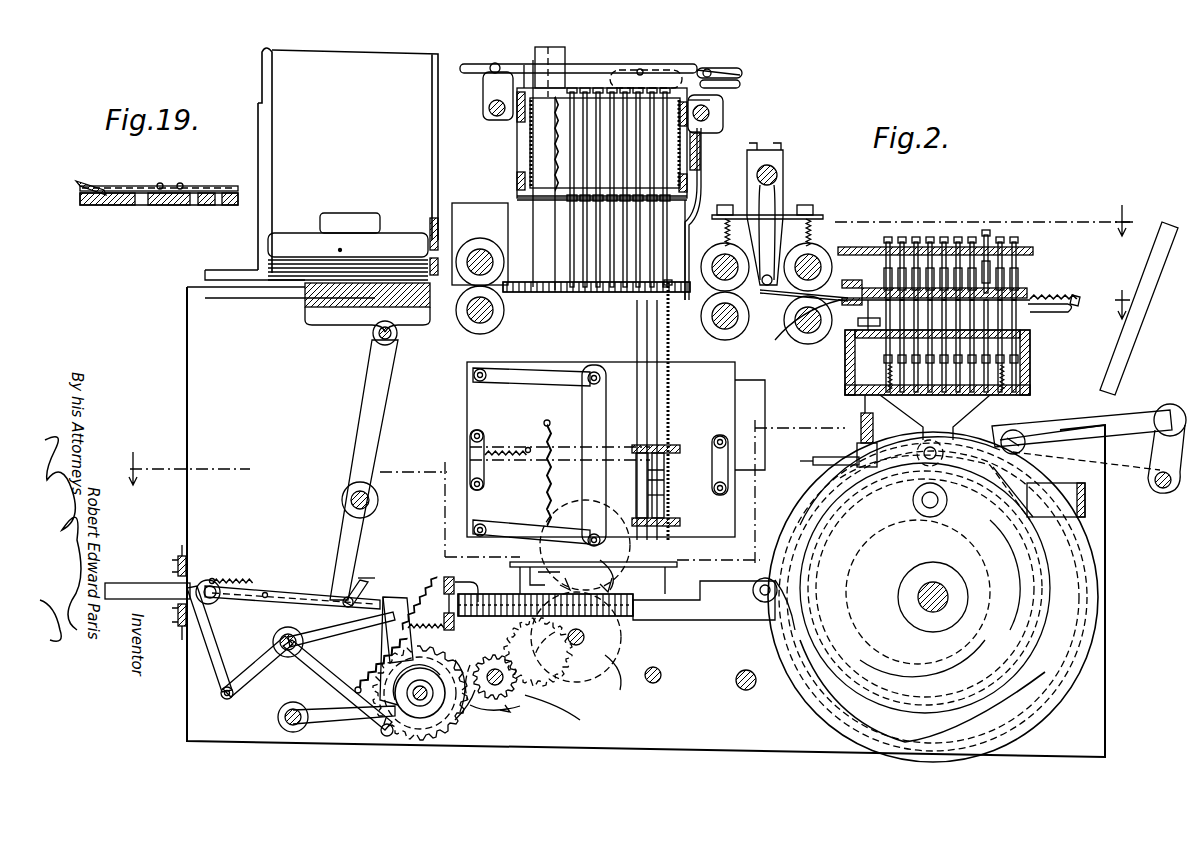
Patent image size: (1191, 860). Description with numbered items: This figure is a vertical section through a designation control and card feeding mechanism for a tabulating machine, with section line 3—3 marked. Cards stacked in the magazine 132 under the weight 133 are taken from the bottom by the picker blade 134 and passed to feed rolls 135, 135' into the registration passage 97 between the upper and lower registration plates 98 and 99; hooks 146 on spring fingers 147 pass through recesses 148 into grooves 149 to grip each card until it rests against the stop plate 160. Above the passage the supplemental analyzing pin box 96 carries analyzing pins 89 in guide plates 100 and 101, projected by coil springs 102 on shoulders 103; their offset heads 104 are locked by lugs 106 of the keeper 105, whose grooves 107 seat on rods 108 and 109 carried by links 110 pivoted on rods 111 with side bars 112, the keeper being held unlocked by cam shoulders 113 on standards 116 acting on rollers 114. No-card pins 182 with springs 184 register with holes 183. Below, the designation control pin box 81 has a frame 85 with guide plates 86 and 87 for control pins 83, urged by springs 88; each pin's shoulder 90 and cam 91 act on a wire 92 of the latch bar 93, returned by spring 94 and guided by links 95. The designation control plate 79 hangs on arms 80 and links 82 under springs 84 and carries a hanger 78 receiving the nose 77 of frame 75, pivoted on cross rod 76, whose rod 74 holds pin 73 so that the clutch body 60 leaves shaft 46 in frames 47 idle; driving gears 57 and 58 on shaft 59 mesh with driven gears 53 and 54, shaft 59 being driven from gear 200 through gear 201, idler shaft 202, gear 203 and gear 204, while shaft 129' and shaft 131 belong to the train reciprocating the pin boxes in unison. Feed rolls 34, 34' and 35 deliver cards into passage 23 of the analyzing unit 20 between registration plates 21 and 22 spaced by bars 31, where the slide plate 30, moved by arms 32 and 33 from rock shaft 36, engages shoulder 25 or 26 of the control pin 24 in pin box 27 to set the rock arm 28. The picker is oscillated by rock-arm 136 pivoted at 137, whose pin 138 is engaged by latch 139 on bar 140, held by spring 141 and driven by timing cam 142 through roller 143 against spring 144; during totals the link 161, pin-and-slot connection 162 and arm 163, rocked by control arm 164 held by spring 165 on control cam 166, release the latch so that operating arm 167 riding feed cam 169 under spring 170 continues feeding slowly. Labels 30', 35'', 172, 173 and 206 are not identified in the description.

In FIG. 2, the section line 3 is at (625, 332).
In FIG. 2, the analyzing unit 20 is at (953, 244).
In FIG. 2, the card registration plate 21 is at (1020, 290).
In FIG. 2, the card registration plate 22 is at (1040, 312).
In FIG. 2, the card passage 23 is at (1050, 297).
In FIG. 2, the total and space control pin 24 is at (862, 400).
In FIG. 2, the shoulder 25 is at (807, 331).
In FIG. 2, the shoulder 26 is at (860, 322).
In FIG. 2, the analyzing pin box 27 is at (1030, 358).
In FIG. 2, the rock arm 28 is at (1005, 430).
In FIG. 2, the perforated plate 30 is at (852, 272).
In FIG. 2, the guide block 30' is at (1087, 282).
In FIG. 2, the spacer bars 31 is at (870, 288).
In FIG. 2, the projecting arms 32 is at (780, 302).
In FIG. 2, the arms 33 is at (780, 200).
In FIG. 2, the feed roll 34 is at (718, 255).
In FIG. 2, the feed roll 34' is at (718, 324).
In FIG. 2, the feed roll 35 is at (822, 256).
In FIG. 2, the feed roller 35'' is at (792, 326).
In FIG. 2, the rock shaft 36 is at (778, 175).
In FIG. 2, the shaft 46 is at (425, 715).
In FIG. 2, the frames 47 is at (505, 735).
In FIG. 2, the driven gear 53 is at (515, 710).
In FIG. 2, the driven gear 54 is at (480, 713).
In FIG. 2, the driving gear 57 is at (520, 680).
In FIG. 2, the driving gear 58 is at (520, 683).
In FIG. 2, the driving shaft 59 is at (530, 668).
In FIG. 2, the clutch body 60 is at (460, 735).
In FIG. 2, the pin 73 is at (443, 628).
In FIG. 2, the transverse rod 74 is at (388, 622).
In FIG. 2, the frame 75 is at (335, 640).
In FIG. 2, the cross rod 76 is at (288, 657).
In FIG. 2, the nose 77 is at (545, 596).
In FIG. 2, the hanger 78 is at (510, 566).
In FIG. 2, the designation control plate 79 is at (615, 576).
In FIG. 2, the arms 80 is at (590, 432).
In FIG. 2, the designation control pin box 81 is at (597, 449).
In FIG. 2, the links 82 is at (530, 368).
In FIG. 2, the designation control pins 83 is at (660, 400).
In FIG. 2, the springs 84 is at (545, 440).
In FIG. 2, the frame 85 is at (730, 430).
In FIG. 2, the upper guide plate 86 is at (680, 449).
In FIG. 2, the lower guide plate 87 is at (680, 522).
In FIG. 2, the springs 88 is at (672, 412).
In FIG. 2, the analyzing pins 89 is at (670, 240).
In FIG. 2, the shoulder 90 is at (664, 458).
In FIG. 2, the cam 91 is at (664, 474).
In FIG. 2, the transverse wire 92 is at (636, 478).
In FIG. 2, the latch bar 93 is at (664, 498).
In FIG. 2, the spring 94 is at (505, 458).
In FIG. 2, the links 95 is at (478, 444).
In FIG. 2, the supplemental analyzing pin box 96 is at (548, 275).
In FIG. 2, the card registration passage 97 is at (680, 298).
In FIG. 19, the upper registration plate 98 is at (230, 186).
In FIG. 2, the upper registration plate 98 is at (680, 285).
In FIG. 19, the lower registration plate 99 is at (128, 205).
In FIG. 2, the lower registration plate 99 is at (660, 292).
In FIG. 2, the upper pin guide plate 100 is at (715, 98).
In FIG. 2, the lower pin guide plate 101 is at (688, 197).
In FIG. 2, the coil springs 102 is at (700, 138).
In FIG. 2, the shoulders 103 is at (696, 185).
In FIG. 2, the heads 104 is at (668, 88).
In FIG. 2, the keeper 105 is at (600, 70).
In FIG. 2, the lugs 106 is at (672, 72).
In FIG. 2, the grooves 107 is at (712, 78).
In FIG. 2, the rod 108 is at (700, 80).
In FIG. 2, the rod 109 is at (495, 63).
In FIG. 2, the links 110 is at (483, 92).
In FIG. 2, the rods 111 is at (489, 108).
In FIG. 2, the side bars 112 is at (740, 84).
In FIG. 2, the cam shoulders 113 is at (548, 50).
In FIG. 2, the rollers 114 is at (524, 65).
In FIG. 2, the standards 116 is at (565, 52).
In FIG. 2, the shaft 129' is at (762, 691).
In FIG. 2, the shaft 131 is at (940, 590).
In FIG. 2, the magazine 132 is at (258, 236).
In FIG. 2, the weight 133 is at (388, 236).
In FIG. 2, the picker blade 134 is at (305, 300).
In FIG. 2, the feed roll 135 is at (480, 244).
In FIG. 2, the feed roll 135' is at (467, 322).
In FIG. 2, the rock-arm 136 is at (365, 412).
In FIG. 2, the pivot 137 is at (350, 500).
In FIG. 2, the pin 138 is at (370, 585).
In FIG. 2, the latch 139 is at (285, 586).
In FIG. 2, the bar 140 is at (148, 570).
In FIG. 2, the spring 141 is at (245, 580).
In FIG. 2, the card feed timing cam 142 is at (790, 610).
In FIG. 2, the roller 143 is at (758, 582).
In FIG. 2, the coil spring 144 is at (612, 630).
In FIG. 19, the hooks 146 is at (100, 186).
In FIG. 19, the spring fingers 147 is at (140, 187).
In FIG. 19, the recesses 148 is at (78, 183).
In FIG. 19, the grooves 149 is at (82, 203).
In FIG. 2, the stop plate 160 is at (700, 172).
In FIG. 2, the link 161 is at (212, 640).
In FIG. 2, the pin and slot connection 162 is at (222, 698).
In FIG. 2, the arm 163 is at (250, 695).
In FIG. 2, the control arm 164 is at (375, 735).
In FIG. 2, the spring 165 is at (395, 660).
In FIG. 2, the control cam 166 is at (418, 705).
In FIG. 2, the operating arm 167 is at (310, 728).
In FIG. 2, the feed cam 169 is at (477, 718).
In FIG. 2, the spring 170 is at (467, 600).
In FIG. 2, the spring 172 is at (419, 599).
In FIG. 2, the link 173 is at (376, 577).
In FIG. 2, the no-card control pins 182 is at (525, 280).
In FIG. 2, the holes 183 is at (550, 292).
In FIG. 2, the coil spring 184 is at (530, 135).
In FIG. 2, the gear 200 is at (558, 530).
In FIG. 2, the gear 201 is at (628, 679).
In FIG. 2, the idler shaft 202 is at (585, 640).
In FIG. 2, the gear 203 is at (660, 690).
In FIG. 2, the gear 204 is at (569, 718).
In FIG. 2, the pin 206 is at (662, 680).